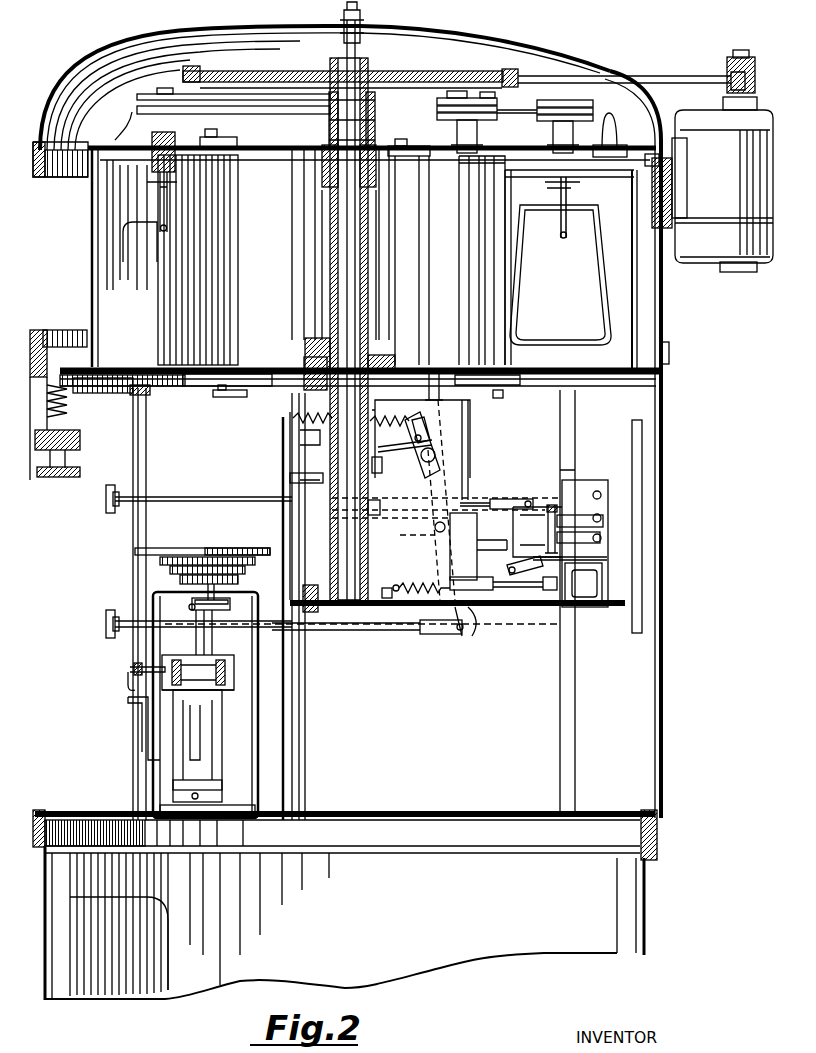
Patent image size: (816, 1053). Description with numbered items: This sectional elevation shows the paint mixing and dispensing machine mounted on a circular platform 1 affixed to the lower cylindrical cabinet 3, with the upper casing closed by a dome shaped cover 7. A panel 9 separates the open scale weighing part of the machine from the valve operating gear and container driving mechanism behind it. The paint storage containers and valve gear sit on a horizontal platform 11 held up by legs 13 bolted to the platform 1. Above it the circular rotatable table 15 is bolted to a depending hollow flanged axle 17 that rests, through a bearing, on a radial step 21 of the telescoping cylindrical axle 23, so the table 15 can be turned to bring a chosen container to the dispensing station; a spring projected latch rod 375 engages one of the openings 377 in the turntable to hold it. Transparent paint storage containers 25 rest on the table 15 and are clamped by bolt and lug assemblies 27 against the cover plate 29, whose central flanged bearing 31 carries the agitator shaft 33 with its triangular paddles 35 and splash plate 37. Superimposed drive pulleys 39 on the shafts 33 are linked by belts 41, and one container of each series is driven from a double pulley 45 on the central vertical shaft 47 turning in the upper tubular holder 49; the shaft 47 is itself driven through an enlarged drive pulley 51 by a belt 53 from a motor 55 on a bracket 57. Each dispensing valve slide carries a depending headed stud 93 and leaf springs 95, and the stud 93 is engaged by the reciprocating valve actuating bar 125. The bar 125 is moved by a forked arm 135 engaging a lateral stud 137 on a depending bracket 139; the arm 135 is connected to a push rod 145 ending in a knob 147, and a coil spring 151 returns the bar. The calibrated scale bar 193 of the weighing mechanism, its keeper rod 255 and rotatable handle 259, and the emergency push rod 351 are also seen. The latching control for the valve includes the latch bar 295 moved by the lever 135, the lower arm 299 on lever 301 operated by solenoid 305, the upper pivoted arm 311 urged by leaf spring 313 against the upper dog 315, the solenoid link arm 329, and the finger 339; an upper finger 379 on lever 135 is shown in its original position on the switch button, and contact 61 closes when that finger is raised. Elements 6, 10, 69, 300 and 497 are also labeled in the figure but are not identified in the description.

The circular platform 1 is at (646, 824).
The lower cylindrical cabinet 3 is at (648, 898).
The partition plate 6 is at (668, 384).
The dome shaped cover 7 is at (552, 52).
The panel 9 is at (290, 742).
The collar 10 is at (374, 508).
The horizontal platform 11 is at (606, 608).
The legs 13 is at (575, 747).
The circular rotatable table 15 is at (667, 357).
The depending hollow flanged axle 17 is at (388, 366).
The radial step 21 is at (434, 524).
The telescoping cylindrical axle 23 is at (372, 606).
The paint storage containers 25 is at (225, 222).
The bolt and lug assemblies 27 is at (238, 145).
The cover plate 29 is at (88, 172).
The central flanged bearing 31 is at (617, 141).
The shaft 33 is at (572, 214).
The triangular shaped paddles 35 is at (575, 236).
The flared disc or splash plate 37 is at (572, 188).
The drive pulleys 39 is at (595, 120).
The belts 41 is at (511, 114).
The double pulley 45 is at (375, 112).
The central vertical shaft 47 is at (360, 52).
The upper tubular holder 49 is at (370, 206).
The enlarged drive pulley 51 is at (466, 76).
The belt 53 is at (638, 80).
The motor 55 is at (710, 258).
The bracket 57 is at (714, 82).
The contact 61 is at (115, 140).
The bracket 69 is at (200, 386).
The depending headed stud 93 is at (226, 398).
The leaf springs 95 is at (520, 364).
The valve actuating bar 125 is at (472, 408).
The forked arm 135 is at (452, 440).
The lateral stud 137 is at (456, 425).
The depending bracket 139 is at (437, 396).
The push rod 145 is at (434, 634).
The knob 147 is at (107, 631).
The coil spring 151 is at (300, 426).
The calibrated scale bar 193 is at (130, 670).
The depending rod 255 is at (207, 552).
The rotatable handle 259 is at (128, 702).
The latch bar 295 is at (596, 526).
The lower parallel arm 299 is at (508, 568).
The spring 300 is at (437, 580).
The lever 301 is at (459, 544).
The solenoid 305 is at (606, 580).
The upper pivoted arm 311 is at (580, 506).
The leaf spring 313 is at (600, 513).
The upper dog 315 is at (546, 503).
The link arm 329 is at (470, 478).
The finger 339 is at (602, 558).
The push rod 351 is at (109, 503).
The spring projected latch rod 375 is at (58, 478).
The openings 377 is at (44, 334).
The upper finger 379 is at (440, 456).
The cylinder 497 is at (495, 508).